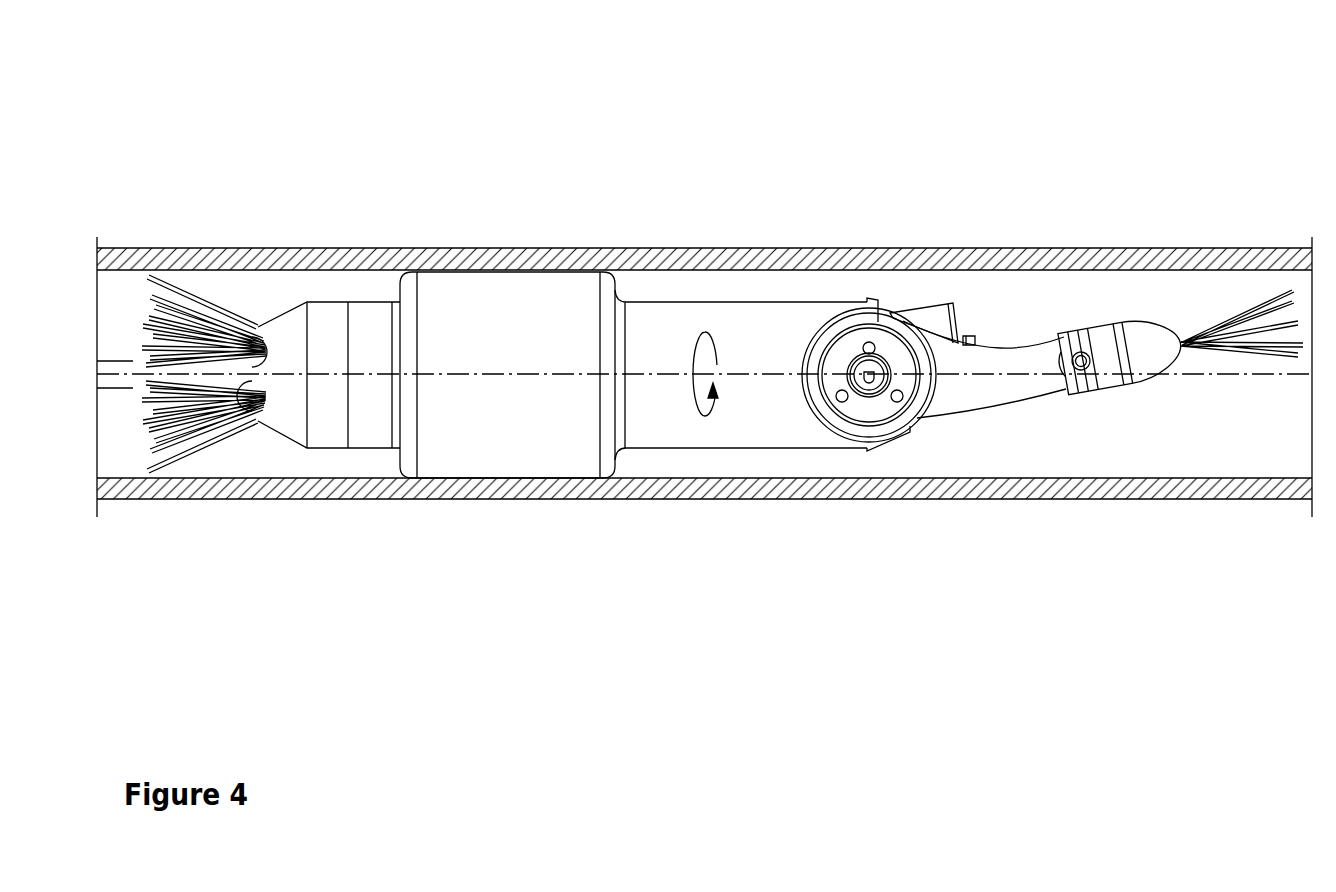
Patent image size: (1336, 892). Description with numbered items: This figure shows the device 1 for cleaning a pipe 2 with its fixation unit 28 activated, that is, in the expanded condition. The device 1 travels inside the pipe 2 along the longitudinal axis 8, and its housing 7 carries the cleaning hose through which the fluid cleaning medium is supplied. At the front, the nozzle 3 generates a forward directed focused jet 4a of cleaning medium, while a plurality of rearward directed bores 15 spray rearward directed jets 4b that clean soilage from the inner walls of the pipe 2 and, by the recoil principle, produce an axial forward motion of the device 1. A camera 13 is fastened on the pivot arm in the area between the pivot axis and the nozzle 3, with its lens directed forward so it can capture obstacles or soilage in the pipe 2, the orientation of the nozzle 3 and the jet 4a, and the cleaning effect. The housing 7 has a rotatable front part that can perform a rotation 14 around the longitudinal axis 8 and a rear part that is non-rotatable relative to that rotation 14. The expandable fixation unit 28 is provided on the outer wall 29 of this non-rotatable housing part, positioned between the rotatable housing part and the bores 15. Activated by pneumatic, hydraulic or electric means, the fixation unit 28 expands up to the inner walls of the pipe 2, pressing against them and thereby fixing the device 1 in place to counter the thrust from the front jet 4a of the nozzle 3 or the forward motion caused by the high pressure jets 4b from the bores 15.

The device 1 is at (435, 228).
The pipe 2 is at (838, 490).
The nozzle 3 is at (1133, 333).
The forward directed focused jet 4a is at (1246, 309).
The rearward directed jets 4b is at (179, 460).
The housing 7 is at (724, 89).
The longitudinal axis 8 is at (1205, 378).
The camera 13 is at (936, 320).
The rotation 14 is at (710, 425).
The rearward directed bores 15 is at (258, 412).
The fixation unit 28 is at (560, 478).
The outer wall 29 is at (395, 447).